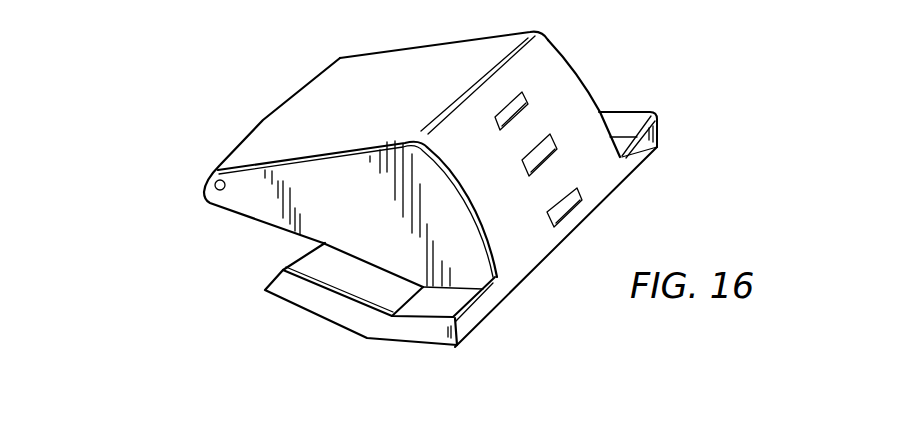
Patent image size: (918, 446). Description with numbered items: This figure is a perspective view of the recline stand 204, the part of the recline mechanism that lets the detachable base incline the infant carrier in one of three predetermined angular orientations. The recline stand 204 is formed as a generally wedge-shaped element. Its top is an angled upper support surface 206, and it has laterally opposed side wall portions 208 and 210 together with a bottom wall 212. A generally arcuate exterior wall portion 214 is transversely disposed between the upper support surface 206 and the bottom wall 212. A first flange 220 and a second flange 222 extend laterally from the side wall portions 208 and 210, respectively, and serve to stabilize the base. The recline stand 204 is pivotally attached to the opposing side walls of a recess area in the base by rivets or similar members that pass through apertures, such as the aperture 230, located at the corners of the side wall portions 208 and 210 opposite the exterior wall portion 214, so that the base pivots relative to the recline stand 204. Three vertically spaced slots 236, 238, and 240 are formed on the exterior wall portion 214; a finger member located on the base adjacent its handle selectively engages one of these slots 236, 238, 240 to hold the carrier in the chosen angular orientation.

The recline stand 204 is at (283, 95).
The angled upper support surface 206 is at (358, 100).
The side wall portion 208 is at (583, 80).
The side wall portion 210 is at (248, 205).
The bottom wall 212 is at (264, 228).
The exterior wall portion 214 is at (528, 265).
The first flange 220 is at (628, 128).
The second flange 222 is at (354, 318).
The aperture 230 is at (211, 195).
The slot 236 is at (566, 205).
The slot 238 is at (548, 152).
The slot 240 is at (530, 97).